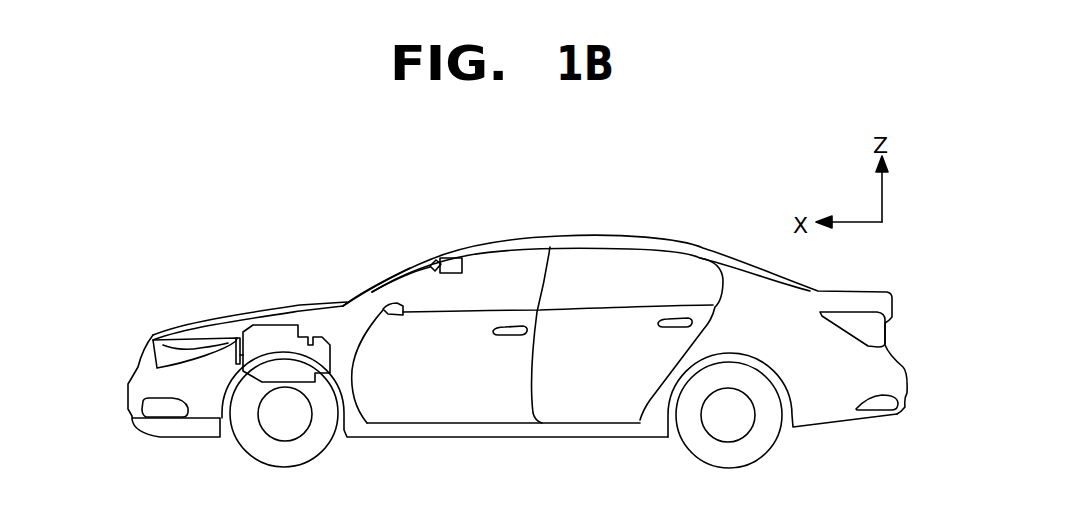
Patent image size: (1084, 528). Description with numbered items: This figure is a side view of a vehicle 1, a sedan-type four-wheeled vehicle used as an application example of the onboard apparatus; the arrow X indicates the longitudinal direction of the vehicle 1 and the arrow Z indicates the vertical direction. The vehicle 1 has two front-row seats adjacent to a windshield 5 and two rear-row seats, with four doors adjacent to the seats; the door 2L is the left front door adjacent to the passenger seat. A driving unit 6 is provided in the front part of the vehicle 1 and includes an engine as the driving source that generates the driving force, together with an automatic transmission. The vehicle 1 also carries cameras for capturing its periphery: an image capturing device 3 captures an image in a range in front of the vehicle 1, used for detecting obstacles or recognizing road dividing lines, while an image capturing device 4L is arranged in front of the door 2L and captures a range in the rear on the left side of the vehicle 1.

The vehicle 1 is at (268, 190).
The door 2L is at (452, 408).
The image capturing device 3 is at (450, 256).
The image capturing device 4L is at (399, 313).
The windshield 5 is at (368, 284).
The driving unit 6 is at (248, 330).